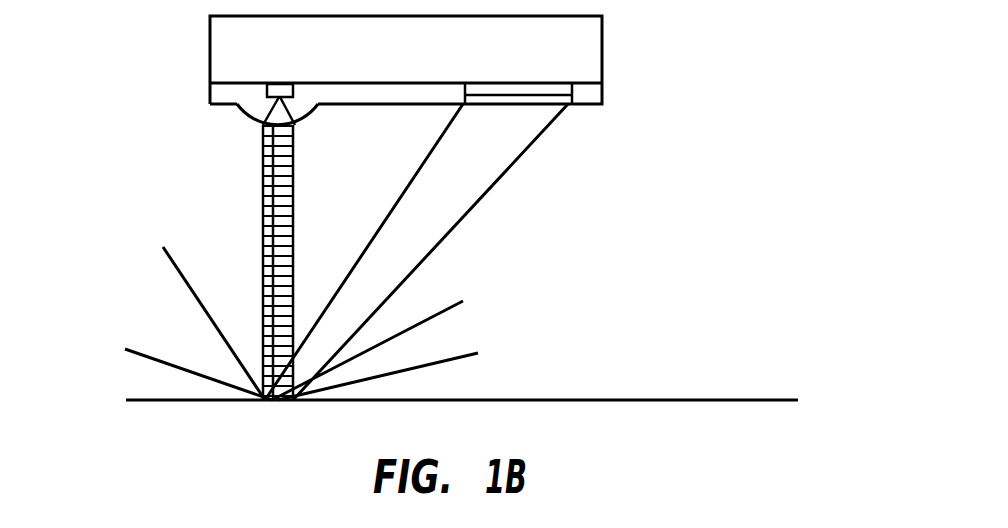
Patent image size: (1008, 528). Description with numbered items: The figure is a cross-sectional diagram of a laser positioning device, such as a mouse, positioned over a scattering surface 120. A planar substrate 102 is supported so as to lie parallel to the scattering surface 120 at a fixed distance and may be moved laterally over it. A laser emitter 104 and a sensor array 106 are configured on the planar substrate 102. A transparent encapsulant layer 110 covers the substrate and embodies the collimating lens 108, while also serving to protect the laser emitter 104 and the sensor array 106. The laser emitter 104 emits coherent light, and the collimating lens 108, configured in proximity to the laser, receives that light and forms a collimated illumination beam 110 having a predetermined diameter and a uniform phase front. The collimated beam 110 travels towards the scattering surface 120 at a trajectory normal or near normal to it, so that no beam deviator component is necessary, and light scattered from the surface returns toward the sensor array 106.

The planar substrate 102 is at (406, 60).
The laser emitter 104 is at (267, 88).
The sensor array 106 is at (574, 89).
The collimating lens 108 is at (265, 105).
The transparent encapsulant layer 110 is at (260, 227).
The scattering surface 120 is at (735, 399).